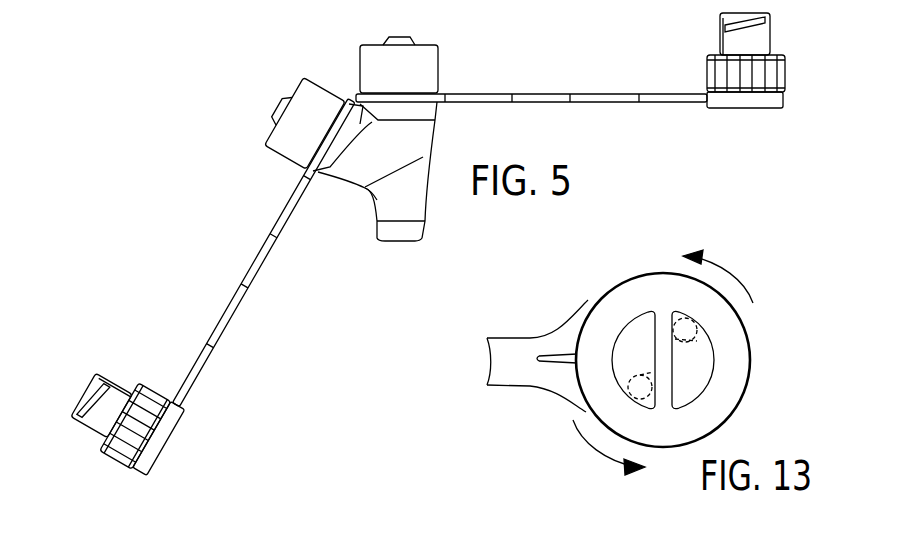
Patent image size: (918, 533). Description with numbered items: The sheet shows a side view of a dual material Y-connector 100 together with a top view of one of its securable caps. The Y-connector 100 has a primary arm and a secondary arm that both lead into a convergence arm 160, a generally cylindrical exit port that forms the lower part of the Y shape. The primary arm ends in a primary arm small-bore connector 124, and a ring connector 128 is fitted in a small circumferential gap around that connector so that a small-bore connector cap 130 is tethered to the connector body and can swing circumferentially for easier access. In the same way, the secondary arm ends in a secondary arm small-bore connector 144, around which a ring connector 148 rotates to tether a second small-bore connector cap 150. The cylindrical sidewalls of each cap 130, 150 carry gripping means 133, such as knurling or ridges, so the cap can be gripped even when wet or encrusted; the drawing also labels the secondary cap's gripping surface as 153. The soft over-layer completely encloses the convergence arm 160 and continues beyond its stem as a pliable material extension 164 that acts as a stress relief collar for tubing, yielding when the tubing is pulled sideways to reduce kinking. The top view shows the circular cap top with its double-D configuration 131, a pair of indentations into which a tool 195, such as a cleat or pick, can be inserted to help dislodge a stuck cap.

In FIG. 5, the dual material Y-connector 100 is at (186, 227).
In FIG. 5, the primary arm small-bore connector 124 is at (437, 65).
In FIG. 5, the ring connector 128 is at (533, 94).
In FIG. 5, the small-bore connector cap 130 is at (718, 38).
In FIG. 5, the gripping means 133 is at (745, 77).
In FIG. 5, the secondary arm small-bore connector 144 is at (282, 152).
In FIG. 5, the ring connector 148 is at (232, 310).
In FIG. 5, the second small-bore connector cap 150 is at (116, 380).
In FIG. 5, the second connector 153 is at (154, 396).
In FIG. 5, the convergence arm 160 is at (372, 207).
In FIG. 5, the pliable material extension 164 is at (423, 228).
In FIG. 13, the double-D configuration 131 is at (672, 362).
In FIG. 13, the tool 195 is at (637, 374).